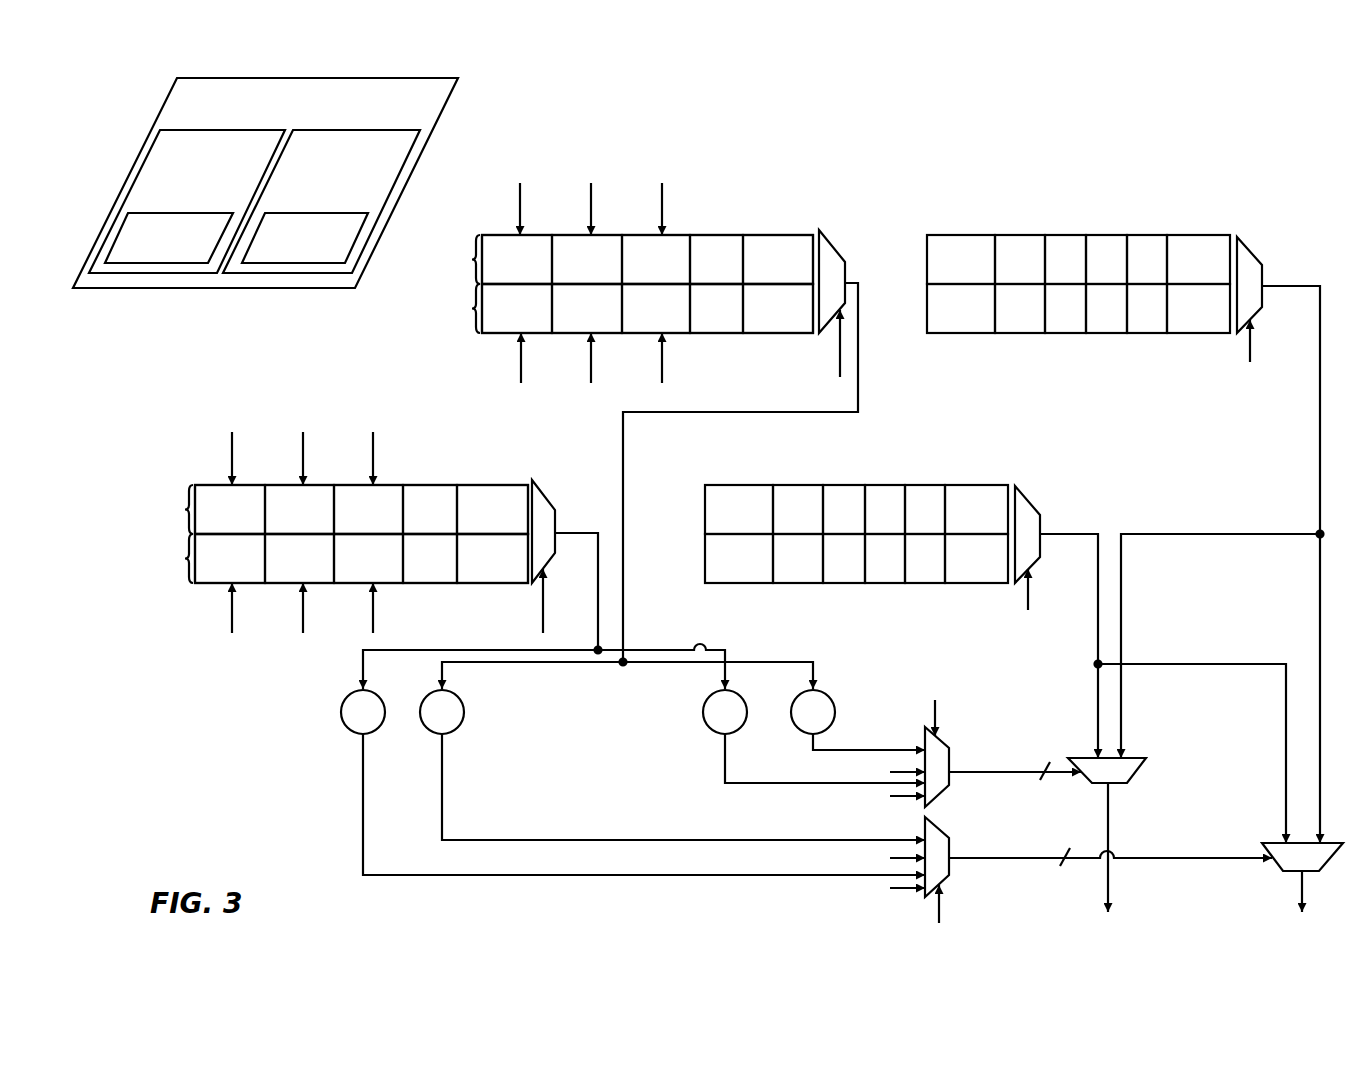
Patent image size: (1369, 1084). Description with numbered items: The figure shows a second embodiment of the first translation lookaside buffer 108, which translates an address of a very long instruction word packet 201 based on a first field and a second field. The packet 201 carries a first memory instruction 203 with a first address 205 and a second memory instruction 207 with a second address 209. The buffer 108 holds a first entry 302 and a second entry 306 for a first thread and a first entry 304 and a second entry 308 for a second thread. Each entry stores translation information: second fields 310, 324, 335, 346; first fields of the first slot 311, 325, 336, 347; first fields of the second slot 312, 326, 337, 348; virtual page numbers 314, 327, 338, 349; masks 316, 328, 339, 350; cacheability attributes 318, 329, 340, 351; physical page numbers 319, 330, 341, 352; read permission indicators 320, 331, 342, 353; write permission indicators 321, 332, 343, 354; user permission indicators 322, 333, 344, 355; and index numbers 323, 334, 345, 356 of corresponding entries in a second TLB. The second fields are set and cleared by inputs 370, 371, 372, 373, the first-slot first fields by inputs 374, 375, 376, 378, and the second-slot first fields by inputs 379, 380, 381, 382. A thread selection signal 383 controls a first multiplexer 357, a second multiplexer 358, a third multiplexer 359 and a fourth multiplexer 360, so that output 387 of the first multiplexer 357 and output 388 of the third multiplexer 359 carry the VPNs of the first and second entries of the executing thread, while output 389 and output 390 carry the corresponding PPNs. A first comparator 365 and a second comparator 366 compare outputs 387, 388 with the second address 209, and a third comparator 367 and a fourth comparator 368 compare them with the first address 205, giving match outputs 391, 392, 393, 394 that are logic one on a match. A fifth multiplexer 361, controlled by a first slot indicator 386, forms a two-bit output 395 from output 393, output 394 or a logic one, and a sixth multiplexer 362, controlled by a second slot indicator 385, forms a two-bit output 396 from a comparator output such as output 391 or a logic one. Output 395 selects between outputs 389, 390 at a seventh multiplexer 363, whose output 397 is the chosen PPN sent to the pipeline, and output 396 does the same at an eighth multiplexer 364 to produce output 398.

The first translation lookaside buffer 108 is at (1250, 157).
The very long instruction word packet 201 is at (197, 290).
The first memory instruction 203 is at (230, 130).
The first address 205 is at (182, 213).
The second memory instruction 207 is at (368, 130).
The second address 209 is at (317, 213).
The first entry of first thread 302 is at (185, 572).
The first entry of second thread 304 is at (185, 497).
The second entry of first thread 306 is at (472, 322).
The second entry of second thread 308 is at (472, 247).
The second field 310 is at (206, 583).
The first field of first slot 311 is at (276, 583).
The first field of second slot 312 is at (348, 583).
The VPN 314 is at (428, 583).
The mask 316 is at (488, 583).
The cacheability attribute 318 is at (737, 583).
The PPN 319 is at (798, 583).
The read permission indicator 320 is at (844, 583).
The write permission indicator 321 is at (885, 583).
The user permission indicator 322 is at (926, 583).
The index number 323 is at (975, 583).
The second field 324 is at (206, 485).
The first field of first slot 325 is at (276, 485).
The first field of second slot 326 is at (348, 485).
The VPN 327 is at (435, 485).
The mask 328 is at (497, 485).
The cacheability attribute 329 is at (740, 485).
The PPN 330 is at (798, 485).
The read permission indicator 331 is at (843, 485).
The write permission indicator 332 is at (885, 485).
The user permission indicator 333 is at (926, 485).
The index number 334 is at (975, 485).
The second field 335 is at (495, 333).
The first field of first slot 336 is at (565, 333).
The first field of second slot 337 is at (635, 333).
The VPN 338 is at (715, 333).
The mask 339 is at (775, 333).
The cacheability attribute 340 is at (961, 333).
The PPN 341 is at (1020, 333).
The read permission indicator 342 is at (1065, 333).
The write permission indicator 343 is at (1106, 333).
The user permission indicator 344 is at (1148, 333).
The index number 345 is at (1196, 333).
The second field 346 is at (493, 235).
The first field of first slot 347 is at (563, 235).
The first field of second slot 348 is at (635, 235).
The VPN 349 is at (722, 235).
The mask 350 is at (783, 235).
The cacheability attribute 351 is at (961, 235).
The PPN 352 is at (1020, 235).
The read permission indicator 353 is at (1065, 235).
The write permission indicator 354 is at (1106, 235).
The user permission indicator 355 is at (1148, 235).
The index number 356 is at (1196, 235).
The first multiplexer 357 is at (540, 492).
The second multiplexer 358 is at (1022, 492).
The third multiplexer 359 is at (826, 238).
The fourth multiplexer 360 is at (1242, 244).
The fifth multiplexer 361 is at (950, 786).
The sixth multiplexer 362 is at (950, 875).
The seventh multiplexer 363 is at (1142, 757).
The eighth multiplexer 364 is at (1266, 842).
The first comparator 365 is at (343, 718).
The second comparator 366 is at (462, 718).
The third comparator 367 is at (704, 718).
The fourth comparator 368 is at (829, 694).
The input 370 is at (232, 622).
The input 371 is at (232, 446).
The input 372 is at (521, 372).
The input 373 is at (520, 196).
The input 374 is at (303, 622).
The input 375 is at (303, 446).
The input 376 is at (591, 372).
The input 378 is at (591, 196).
The input 379 is at (373, 622).
The input 380 is at (373, 446).
The input 381 is at (662, 372).
The input 382 is at (662, 196).
The thread selection signal 383 is at (543, 623).
The second slot indicator 385 is at (938, 917).
The first slot indicator 386 is at (936, 708).
The output of first multiplexer 387 is at (362, 665).
The output of third multiplexer 388 is at (547, 664).
The output of second multiplexer 389 is at (1072, 534).
The output of fourth multiplexer 390 is at (1320, 438).
The output of first comparator 391 is at (375, 875).
The output of second comparator 392 is at (483, 840).
The output of third comparator 393 is at (755, 784).
The output of fourth comparator 394 is at (836, 750).
The output of fifth multiplexer 395 is at (988, 770).
The output of sixth multiplexer 396 is at (1000, 857).
The output of seventh multiplexer 397 is at (1110, 884).
The output of eighth multiplexer 398 is at (1304, 892).